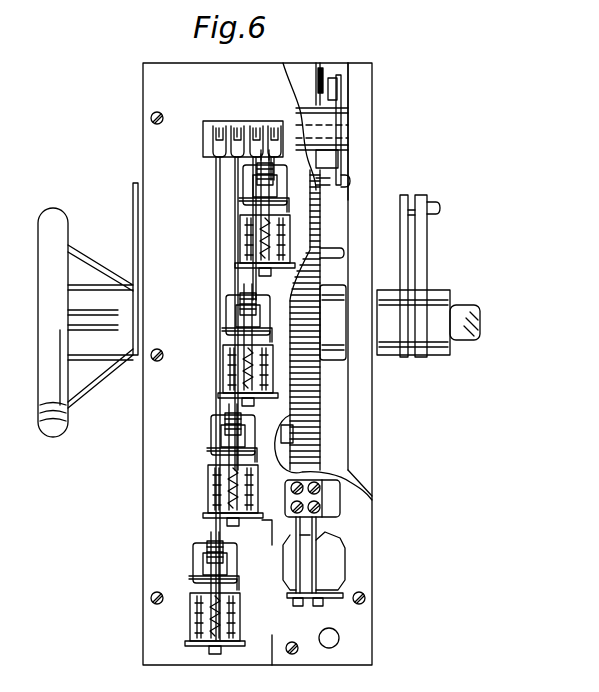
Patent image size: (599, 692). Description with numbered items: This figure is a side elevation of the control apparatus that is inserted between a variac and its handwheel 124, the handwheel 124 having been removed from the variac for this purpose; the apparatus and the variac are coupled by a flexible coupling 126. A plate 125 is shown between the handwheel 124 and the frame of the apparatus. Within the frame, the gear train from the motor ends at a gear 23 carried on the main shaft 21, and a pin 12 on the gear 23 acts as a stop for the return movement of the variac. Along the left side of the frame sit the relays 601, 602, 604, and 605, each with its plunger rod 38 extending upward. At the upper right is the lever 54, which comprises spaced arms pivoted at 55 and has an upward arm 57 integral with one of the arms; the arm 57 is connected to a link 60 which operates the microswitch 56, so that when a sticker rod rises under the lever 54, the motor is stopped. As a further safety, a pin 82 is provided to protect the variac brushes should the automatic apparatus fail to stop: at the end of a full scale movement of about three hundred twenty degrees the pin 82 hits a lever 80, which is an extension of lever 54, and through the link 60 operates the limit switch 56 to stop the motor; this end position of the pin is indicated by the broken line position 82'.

The pin 12 is at (284, 443).
The main shaft 21 is at (383, 355).
The gear 23 is at (318, 392).
The plunger rod 38 is at (272, 168).
The lever 54 is at (336, 125).
The pivot 55 is at (350, 132).
The microswitch 56 is at (320, 80).
The upward arm 57 is at (341, 130).
The link 60 is at (341, 88).
The lever 80 is at (345, 170).
The safety pin 82 is at (332, 241).
The broken line position of the pin 82' is at (362, 177).
The handwheel 124 is at (58, 437).
The mounting plate 125 is at (133, 195).
The flexible coupling 126 is at (408, 195).
The relay 601 is at (192, 628).
The solenoid 602 is at (210, 490).
The solenoid 604 is at (242, 238).
The solenoid 605 is at (224, 372).